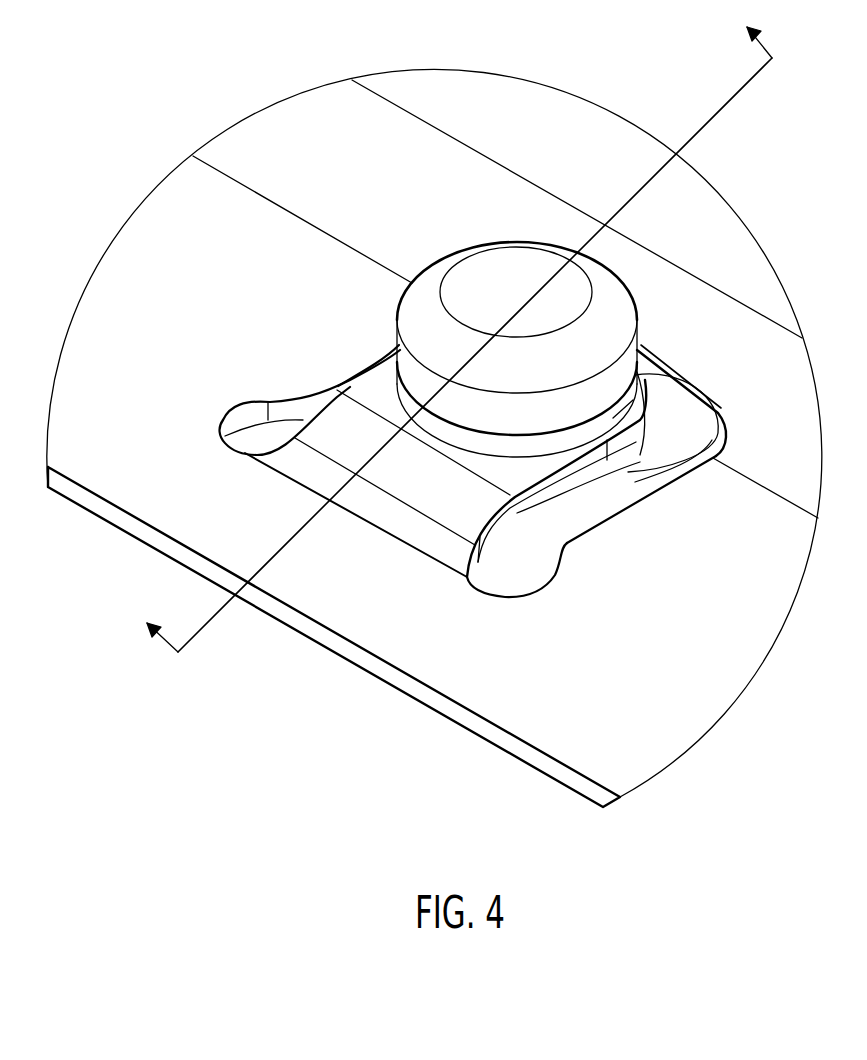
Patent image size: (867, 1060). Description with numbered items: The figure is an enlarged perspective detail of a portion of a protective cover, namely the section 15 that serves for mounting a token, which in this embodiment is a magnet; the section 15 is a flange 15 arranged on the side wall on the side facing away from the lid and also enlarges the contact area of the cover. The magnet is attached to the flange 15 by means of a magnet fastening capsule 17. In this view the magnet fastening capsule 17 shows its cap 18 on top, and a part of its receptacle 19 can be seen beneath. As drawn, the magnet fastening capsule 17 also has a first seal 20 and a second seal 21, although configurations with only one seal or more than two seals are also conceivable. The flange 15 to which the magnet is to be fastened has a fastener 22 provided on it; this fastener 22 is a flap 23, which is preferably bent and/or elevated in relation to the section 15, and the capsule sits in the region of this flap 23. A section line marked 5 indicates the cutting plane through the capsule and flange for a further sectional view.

The section line 5- 5 is at (451, 326).
The section 15 is at (707, 720).
The magnet fastening capsule 17 is at (447, 253).
The cap 18 is at (422, 312).
The receptacle 19 is at (593, 490).
The first seal 20 is at (722, 424).
The second seal 21 is at (640, 393).
The fastener 22 is at (344, 572).
The flap 23 is at (455, 502).